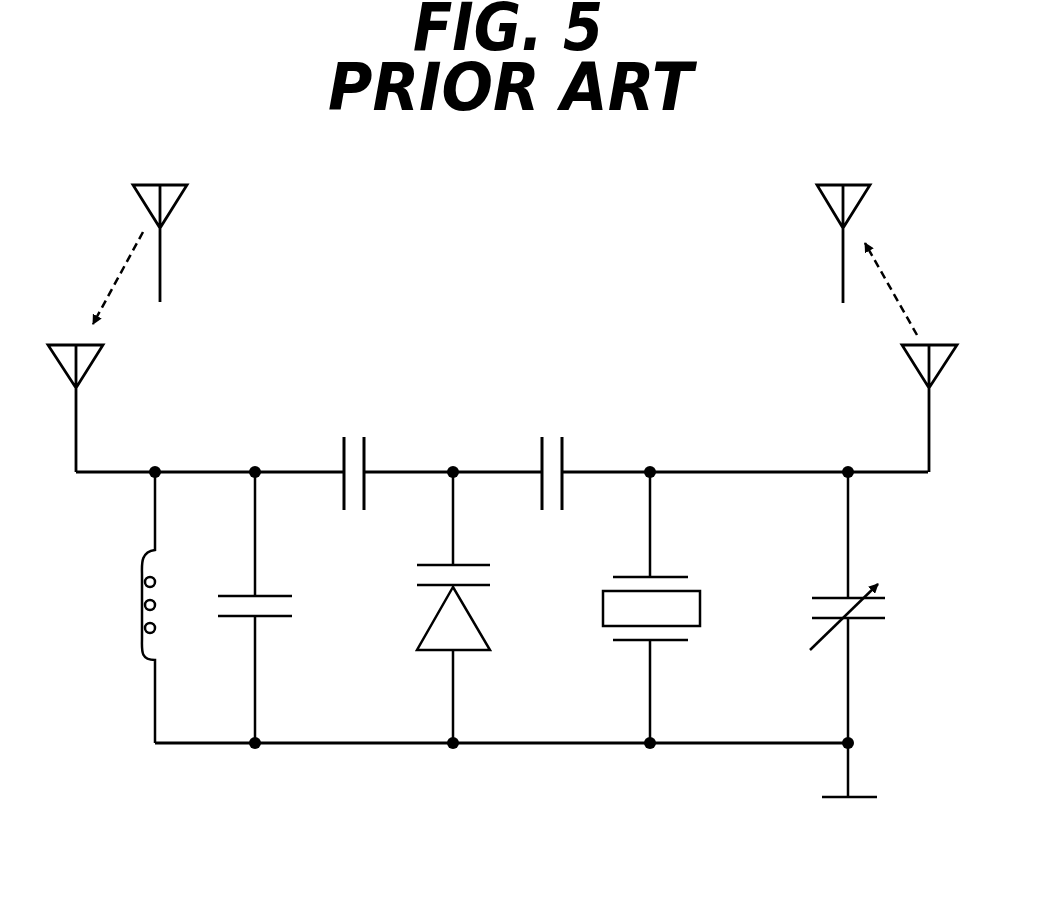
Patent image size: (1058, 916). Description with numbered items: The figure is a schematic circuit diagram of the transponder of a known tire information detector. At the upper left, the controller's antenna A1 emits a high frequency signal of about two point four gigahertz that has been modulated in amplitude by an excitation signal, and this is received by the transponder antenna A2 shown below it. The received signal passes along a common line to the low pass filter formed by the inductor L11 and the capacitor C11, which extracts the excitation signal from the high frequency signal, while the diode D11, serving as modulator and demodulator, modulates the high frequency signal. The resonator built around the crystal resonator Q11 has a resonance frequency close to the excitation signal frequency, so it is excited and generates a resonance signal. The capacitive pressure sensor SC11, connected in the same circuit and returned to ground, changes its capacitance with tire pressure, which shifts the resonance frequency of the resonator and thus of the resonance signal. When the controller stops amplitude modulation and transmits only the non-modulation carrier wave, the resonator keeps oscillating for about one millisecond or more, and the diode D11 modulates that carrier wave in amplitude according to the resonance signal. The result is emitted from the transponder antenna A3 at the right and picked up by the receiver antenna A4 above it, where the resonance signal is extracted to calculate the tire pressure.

The antenna A1 is at (150, 254).
The second antenna A2 is at (85, 408).
The antenna A3 is at (919, 408).
The antenna A4 is at (855, 260).
The low pass filter L11 is at (130, 607).
The low pass filter C11 is at (243, 607).
The diode D11 is at (441, 607).
The crystal resonator Q11 is at (642, 607).
The capacitive pressure sensor SC11 is at (827, 634).